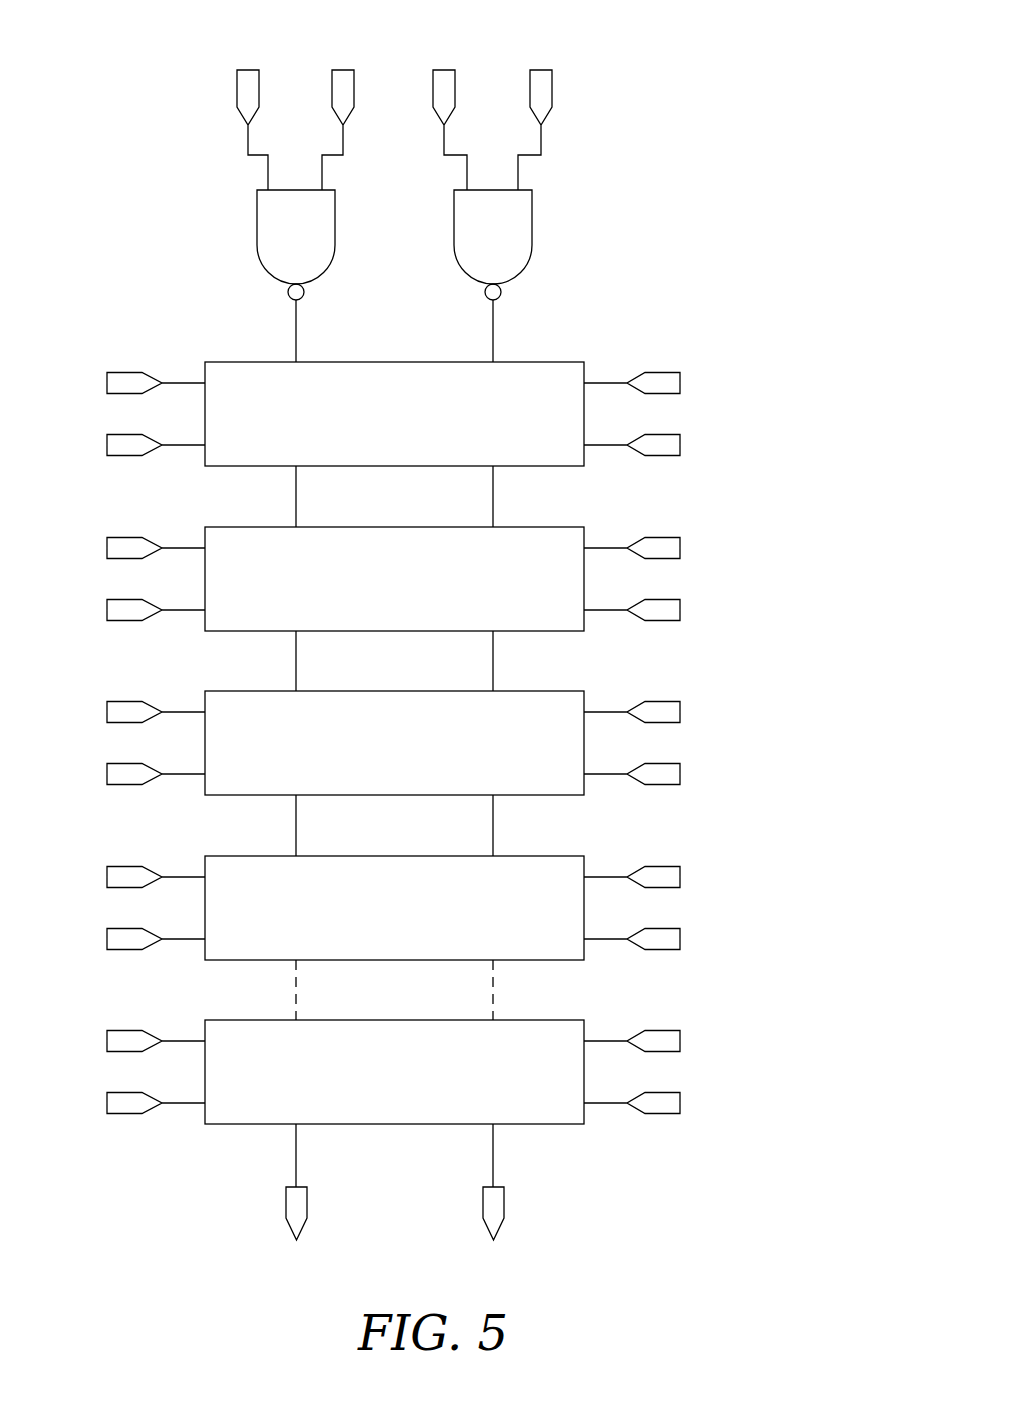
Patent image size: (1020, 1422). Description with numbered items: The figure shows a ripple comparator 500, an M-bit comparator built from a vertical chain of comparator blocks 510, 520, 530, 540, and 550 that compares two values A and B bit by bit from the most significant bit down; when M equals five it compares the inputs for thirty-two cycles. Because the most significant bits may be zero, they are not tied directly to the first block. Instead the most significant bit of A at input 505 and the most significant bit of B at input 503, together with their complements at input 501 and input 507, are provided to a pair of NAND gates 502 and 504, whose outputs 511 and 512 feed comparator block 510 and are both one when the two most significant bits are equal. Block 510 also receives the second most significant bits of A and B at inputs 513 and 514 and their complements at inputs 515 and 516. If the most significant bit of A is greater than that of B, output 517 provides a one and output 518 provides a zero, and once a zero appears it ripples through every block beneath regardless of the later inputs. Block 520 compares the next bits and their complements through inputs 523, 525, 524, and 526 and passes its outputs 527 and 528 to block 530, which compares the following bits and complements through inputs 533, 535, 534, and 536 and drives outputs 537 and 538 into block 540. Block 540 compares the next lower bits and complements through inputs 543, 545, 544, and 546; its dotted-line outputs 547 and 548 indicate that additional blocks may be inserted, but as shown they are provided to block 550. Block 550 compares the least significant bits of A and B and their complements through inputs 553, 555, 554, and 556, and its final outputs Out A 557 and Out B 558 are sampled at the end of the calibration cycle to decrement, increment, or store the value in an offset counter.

The ripple comparator 500 is at (716, 24).
The input for AF M-1 501 is at (250, 141).
The NAND gate 502 is at (336, 218).
The input for B M-1 503 is at (345, 141).
The NAND gate 504 is at (533, 218).
The input for A M-1 505 is at (446, 141).
The input for BF M-1 507 is at (543, 141).
The comparator block 510 is at (395, 360).
The input/output line 511 is at (298, 333).
The input/output line 512 is at (495, 333).
The input for A M-2 513 is at (606, 441).
The input for B M-2 514 is at (182, 380).
The input for AF M-2 515 is at (182, 441).
The input for BF M-2 516 is at (606, 380).
The output 517 is at (298, 498).
The output 518 is at (495, 498).
The comparator block 520 is at (395, 525).
The input for A M-3 523 is at (606, 606).
The input for B M-3 524 is at (182, 545).
The input for AF M-3 525 is at (182, 606).
The input for BF M-3 526 is at (606, 545).
The output 527 is at (298, 662).
The output 528 is at (495, 662).
The comparator block 530 is at (395, 689).
The input for A M-4 533 is at (606, 770).
The input for B M-4 534 is at (182, 709).
The input for AF M-4 535 is at (182, 770).
The input for BF M-4 536 is at (606, 709).
The output 537 is at (298, 827).
The output 538 is at (495, 827).
The comparator block 540 is at (395, 854).
The input for A M-5 543 is at (606, 935).
The input for B M-5 544 is at (182, 874).
The input for AF M-5 545 is at (182, 935).
The input for BF M-5 546 is at (606, 874).
The dotted line output 547 is at (298, 991).
The dotted line output 548 is at (495, 991).
The comparator block 550 is at (395, 1018).
The input for A 0 553 is at (606, 1099).
The input for B 0 554 is at (182, 1038).
The input for AF 0 555 is at (182, 1099).
The input for BF 0 556 is at (606, 1038).
The Out A output 557 is at (298, 1158).
The Out B output 558 is at (495, 1158).